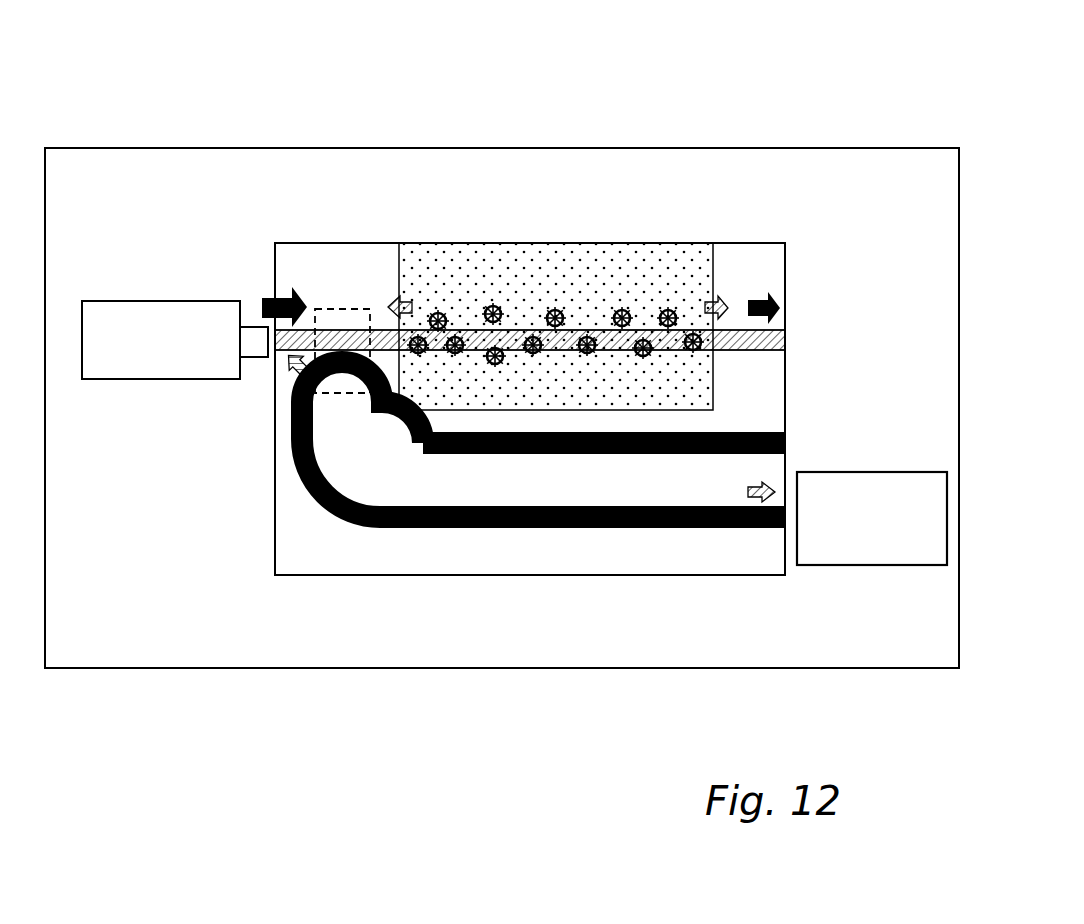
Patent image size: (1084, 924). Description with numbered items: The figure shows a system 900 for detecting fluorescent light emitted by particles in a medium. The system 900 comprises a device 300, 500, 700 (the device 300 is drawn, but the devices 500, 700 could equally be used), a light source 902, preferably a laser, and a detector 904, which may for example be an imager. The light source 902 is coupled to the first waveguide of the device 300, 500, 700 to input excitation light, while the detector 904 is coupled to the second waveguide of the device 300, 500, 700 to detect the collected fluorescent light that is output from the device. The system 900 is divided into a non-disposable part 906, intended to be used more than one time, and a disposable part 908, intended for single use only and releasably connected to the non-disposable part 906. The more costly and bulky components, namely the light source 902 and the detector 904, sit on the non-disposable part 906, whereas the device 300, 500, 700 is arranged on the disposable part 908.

The system 900 is at (502, 392).
The light source 902 is at (158, 320).
The detector 904 is at (905, 488).
The non-disposable part 906 is at (226, 648).
The disposable part 908 is at (732, 558).
The device 300 is at (523, 358).
The device 500 is at (523, 358).
The device 700 is at (352, 258).